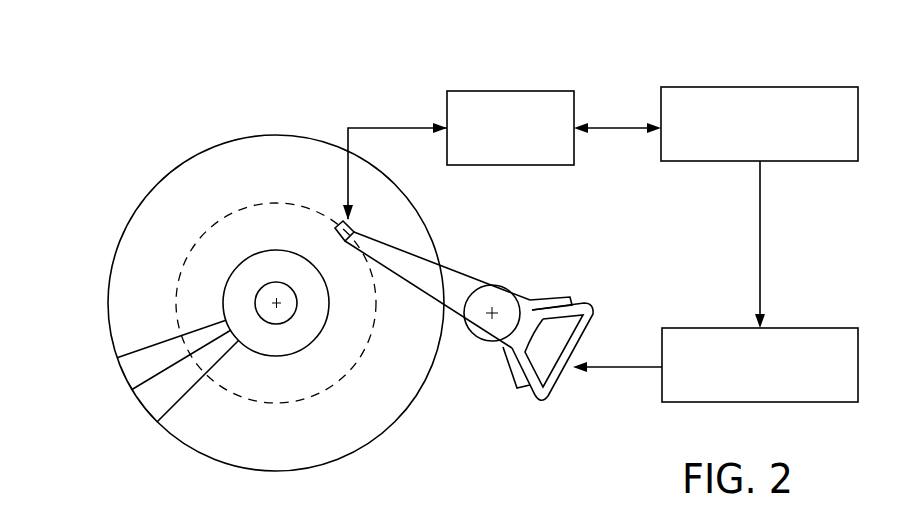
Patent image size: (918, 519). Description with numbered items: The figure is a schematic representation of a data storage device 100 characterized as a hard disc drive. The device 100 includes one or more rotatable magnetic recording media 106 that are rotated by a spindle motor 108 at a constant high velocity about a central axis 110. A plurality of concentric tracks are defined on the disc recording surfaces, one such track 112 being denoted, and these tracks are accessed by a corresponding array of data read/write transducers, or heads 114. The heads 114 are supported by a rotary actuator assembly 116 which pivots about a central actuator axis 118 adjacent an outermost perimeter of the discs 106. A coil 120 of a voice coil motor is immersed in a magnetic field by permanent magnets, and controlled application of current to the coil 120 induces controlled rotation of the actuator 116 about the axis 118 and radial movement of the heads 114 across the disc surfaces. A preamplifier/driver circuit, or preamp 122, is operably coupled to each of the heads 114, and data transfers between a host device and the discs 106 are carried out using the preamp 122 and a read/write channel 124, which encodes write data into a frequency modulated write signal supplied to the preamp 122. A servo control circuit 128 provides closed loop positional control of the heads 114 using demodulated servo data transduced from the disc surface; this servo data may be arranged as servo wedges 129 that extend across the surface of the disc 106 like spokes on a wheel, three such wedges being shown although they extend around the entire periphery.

The device 100 is at (352, 247).
The rotatable magnetic recording media 106 is at (118, 263).
The spindle motor 108 is at (278, 345).
The central axis 110 is at (277, 301).
The track 112 is at (285, 403).
The data read/write transducers 114 is at (339, 221).
The rotary actuator assembly 116 is at (474, 287).
The central actuator axis 118 is at (486, 316).
The coil 120 is at (588, 303).
The preamplifier/driver circuit 122 is at (512, 91).
The read/write channel 124 is at (760, 87).
The servo control circuit 128 is at (802, 328).
The servo wedges 129 is at (147, 343).